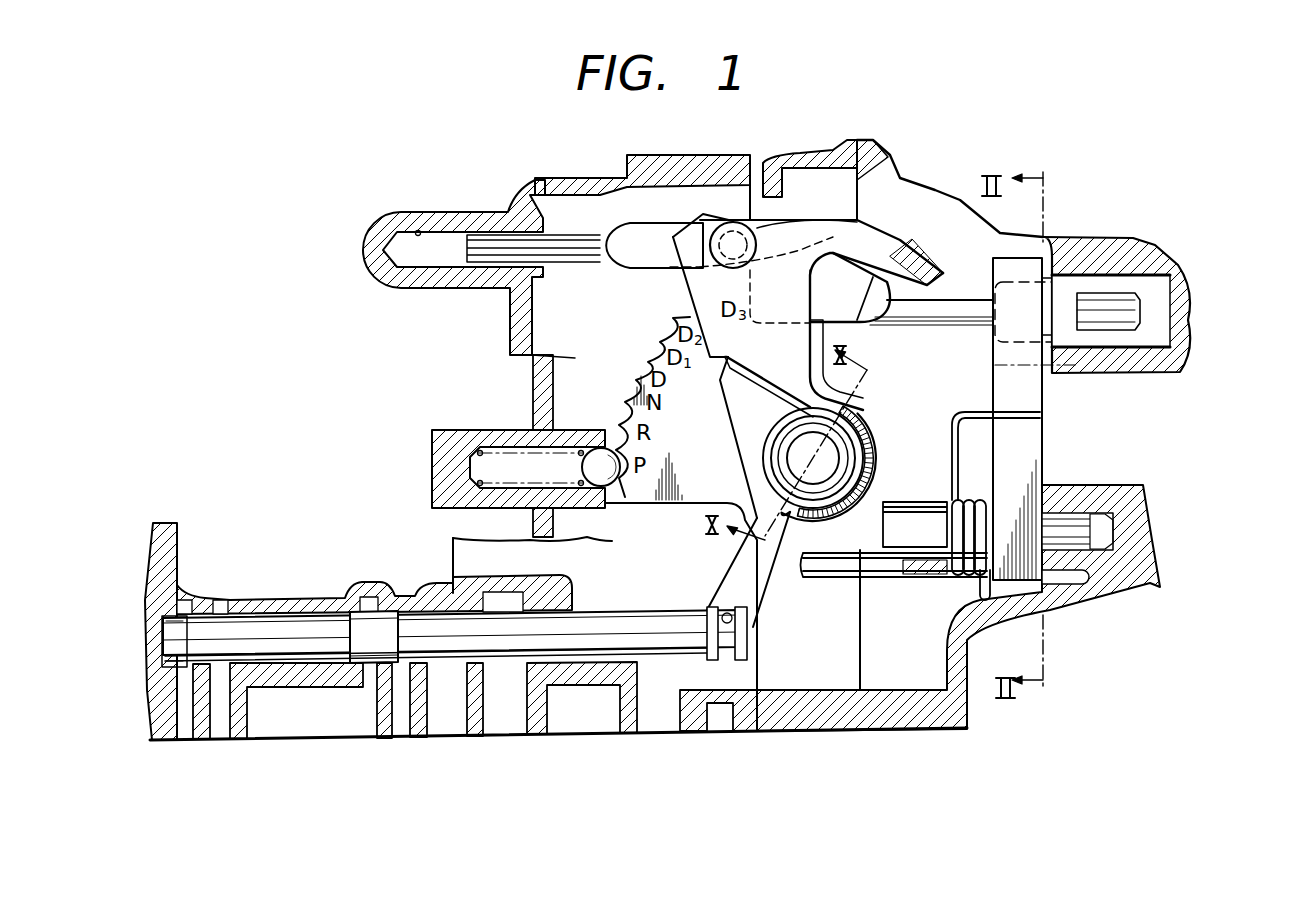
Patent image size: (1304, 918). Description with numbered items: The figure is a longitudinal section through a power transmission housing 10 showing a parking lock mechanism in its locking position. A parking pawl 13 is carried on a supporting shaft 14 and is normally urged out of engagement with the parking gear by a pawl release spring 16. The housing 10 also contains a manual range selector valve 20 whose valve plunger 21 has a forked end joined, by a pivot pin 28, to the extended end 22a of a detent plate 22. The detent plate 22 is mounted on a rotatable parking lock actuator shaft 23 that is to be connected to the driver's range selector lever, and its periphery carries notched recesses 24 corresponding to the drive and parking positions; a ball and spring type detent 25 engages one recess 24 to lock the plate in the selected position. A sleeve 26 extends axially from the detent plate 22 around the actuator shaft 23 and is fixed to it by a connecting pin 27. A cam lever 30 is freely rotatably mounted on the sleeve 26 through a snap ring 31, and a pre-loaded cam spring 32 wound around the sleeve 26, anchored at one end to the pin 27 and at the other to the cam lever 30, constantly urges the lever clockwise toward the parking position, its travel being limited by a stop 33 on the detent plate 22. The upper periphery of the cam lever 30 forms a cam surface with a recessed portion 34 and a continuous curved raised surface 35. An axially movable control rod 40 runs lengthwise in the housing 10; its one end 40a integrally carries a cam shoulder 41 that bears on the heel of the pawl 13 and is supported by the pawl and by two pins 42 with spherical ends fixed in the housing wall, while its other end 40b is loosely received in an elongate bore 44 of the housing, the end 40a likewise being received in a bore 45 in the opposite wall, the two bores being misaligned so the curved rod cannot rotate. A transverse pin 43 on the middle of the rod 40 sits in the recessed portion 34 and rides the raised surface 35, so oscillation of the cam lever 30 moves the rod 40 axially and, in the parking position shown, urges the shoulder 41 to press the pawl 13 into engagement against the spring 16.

The power transmission housing 10 is at (930, 730).
The parking pawl 13 is at (1032, 443).
The supporting shaft 14 is at (1085, 515).
The pawl release spring 16 is at (978, 412).
The manual range selector valve 20 is at (302, 630).
The valve plunger 21 is at (647, 654).
The detent plate 22 is at (652, 366).
The extended end of detent plate 22a is at (727, 580).
The parking lock actuator shaft 23 is at (838, 450).
The notched recesses 24 is at (620, 440).
The ball and spring type detent 25 is at (584, 488).
The sleeve 26 is at (847, 460).
The connecting pin 27 is at (789, 508).
The pivot pin 28 is at (742, 598).
The cam lever 30 is at (700, 320).
The snap ring 31 is at (853, 483).
The cam spring 32 is at (732, 382).
The stop or abutment 33 is at (823, 330).
The recessed portion 34 is at (752, 254).
The curved raised surface 35 is at (835, 222).
The control rod element 40 is at (630, 228).
The one end of control rod 40a is at (1130, 305).
The other end of control rod 40b is at (497, 243).
The cam portion or shoulder 41 is at (1010, 287).
The pins with spherical end surfaces 42 is at (1046, 280).
The pin 43 is at (728, 222).
The elongate bore 44 is at (420, 230).
The bore 45 is at (1138, 262).